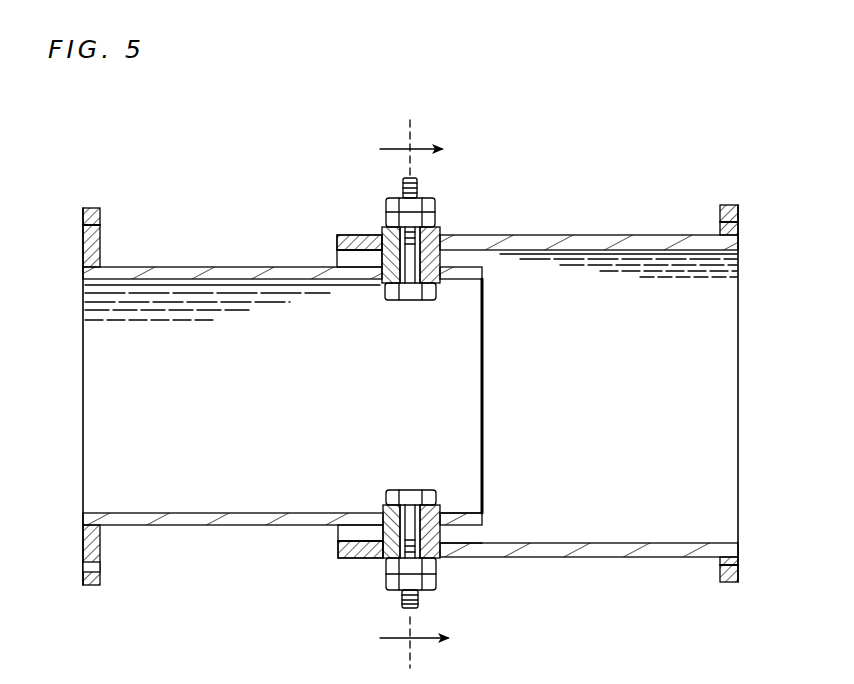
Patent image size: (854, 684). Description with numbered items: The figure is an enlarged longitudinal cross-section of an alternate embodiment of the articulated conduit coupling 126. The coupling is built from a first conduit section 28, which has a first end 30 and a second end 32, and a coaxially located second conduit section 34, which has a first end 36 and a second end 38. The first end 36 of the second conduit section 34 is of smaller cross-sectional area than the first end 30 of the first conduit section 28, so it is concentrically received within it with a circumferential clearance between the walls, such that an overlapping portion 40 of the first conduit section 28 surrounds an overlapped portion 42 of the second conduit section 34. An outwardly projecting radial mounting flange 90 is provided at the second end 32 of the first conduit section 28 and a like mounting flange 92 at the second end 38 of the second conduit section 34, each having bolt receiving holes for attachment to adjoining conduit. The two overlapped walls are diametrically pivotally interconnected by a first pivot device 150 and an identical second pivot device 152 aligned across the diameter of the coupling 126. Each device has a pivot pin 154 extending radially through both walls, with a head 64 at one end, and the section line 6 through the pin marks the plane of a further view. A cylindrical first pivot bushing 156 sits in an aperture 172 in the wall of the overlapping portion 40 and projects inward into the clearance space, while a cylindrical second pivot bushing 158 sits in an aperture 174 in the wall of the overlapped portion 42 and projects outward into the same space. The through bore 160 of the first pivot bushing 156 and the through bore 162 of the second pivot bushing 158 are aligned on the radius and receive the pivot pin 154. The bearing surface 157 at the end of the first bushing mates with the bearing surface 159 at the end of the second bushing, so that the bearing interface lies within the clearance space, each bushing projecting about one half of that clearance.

The section line 6- 6 is at (413, 396).
The first conduit section 28 is at (590, 235).
The first end 30 is at (334, 240).
The second end 32 is at (740, 330).
The second conduit section 34 is at (172, 267).
The first end 36 is at (483, 342).
The second end 38 is at (83, 305).
The overlapping portion 40 is at (340, 556).
The overlapped portion 42 is at (448, 505).
The head 64 is at (388, 297).
The mounting flange 90 is at (732, 205).
The mounting flange 92 is at (92, 207).
The articulated conduit coupling 126 is at (692, 160).
The first pivot device 150 is at (436, 182).
The second pivot device 152 is at (450, 574).
The pivot pin 154 is at (420, 172).
The first pivot bushing 156 is at (440, 235).
The bearing surface 157 is at (380, 283).
The second pivot bushing 158 is at (440, 285).
The bearing surface 159 is at (381, 226).
The through bore 160 is at (440, 228).
The through bore 162 is at (406, 300).
The aperture 172 is at (440, 540).
The aperture 174 is at (467, 508).